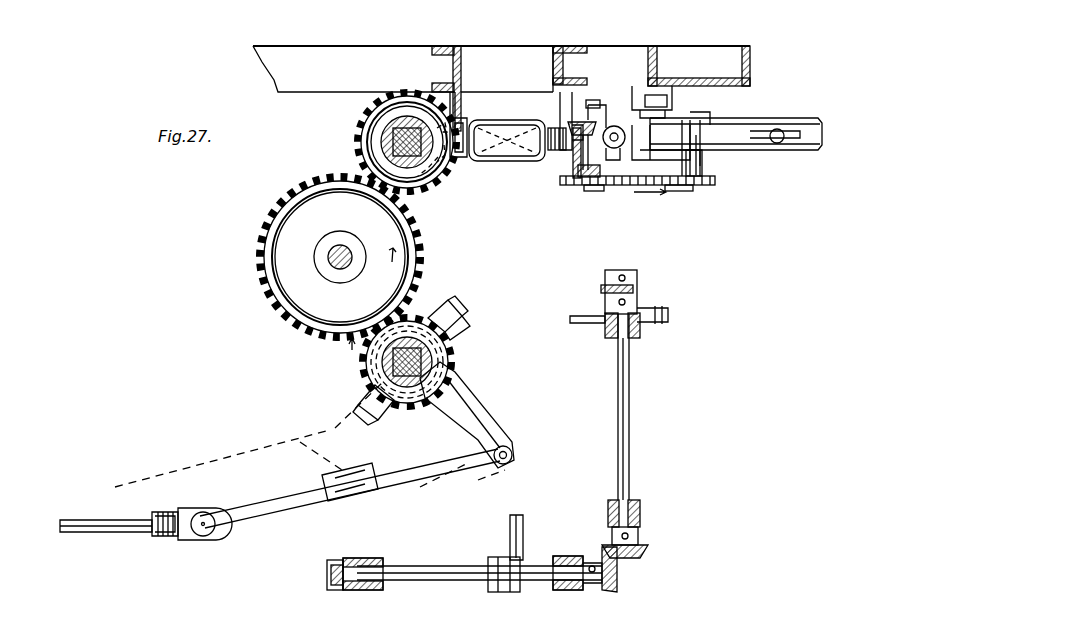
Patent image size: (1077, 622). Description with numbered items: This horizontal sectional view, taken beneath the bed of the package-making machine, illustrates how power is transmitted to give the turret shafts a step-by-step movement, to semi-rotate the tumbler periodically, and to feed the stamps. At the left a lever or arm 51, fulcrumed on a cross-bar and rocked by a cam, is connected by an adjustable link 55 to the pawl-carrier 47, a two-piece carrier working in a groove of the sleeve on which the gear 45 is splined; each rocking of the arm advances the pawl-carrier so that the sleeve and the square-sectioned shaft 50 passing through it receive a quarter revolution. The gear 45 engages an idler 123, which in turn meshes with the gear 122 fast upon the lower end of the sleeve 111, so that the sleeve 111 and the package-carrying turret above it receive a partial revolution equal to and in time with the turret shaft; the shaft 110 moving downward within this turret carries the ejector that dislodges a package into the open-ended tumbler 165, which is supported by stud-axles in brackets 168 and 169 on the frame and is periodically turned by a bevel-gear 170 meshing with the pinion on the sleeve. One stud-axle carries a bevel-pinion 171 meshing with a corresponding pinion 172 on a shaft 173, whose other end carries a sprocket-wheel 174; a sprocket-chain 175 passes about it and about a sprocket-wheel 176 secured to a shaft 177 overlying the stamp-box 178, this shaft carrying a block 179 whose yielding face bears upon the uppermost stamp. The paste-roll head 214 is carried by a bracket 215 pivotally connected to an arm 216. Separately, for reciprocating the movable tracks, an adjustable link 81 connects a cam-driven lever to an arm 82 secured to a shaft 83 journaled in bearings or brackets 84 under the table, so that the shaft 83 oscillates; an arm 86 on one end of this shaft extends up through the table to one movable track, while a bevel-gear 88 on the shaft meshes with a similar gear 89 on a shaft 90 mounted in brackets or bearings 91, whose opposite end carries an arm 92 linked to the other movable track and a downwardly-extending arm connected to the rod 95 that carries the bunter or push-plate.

The gear 45 is at (425, 320).
The pawl-carrier 47 is at (470, 412).
The shaft 50 is at (445, 358).
The lever or arm 51 is at (90, 524).
The adjustable link 55 is at (258, 510).
The adjustable link 81 is at (587, 318).
The arm 82 is at (660, 310).
The shaft 83 is at (630, 425).
The bearings or brackets 84 is at (638, 330).
The arm 86 is at (604, 290).
The bevel-gear 88 is at (640, 552).
The bevel-gear 89 is at (614, 580).
The shaft 90 is at (466, 578).
The brackets or bearings 91 is at (368, 590).
The arm 92 is at (327, 572).
The rod 95 is at (522, 530).
The shaft 110 is at (385, 146).
The sleeve 111 is at (383, 132).
The gear 122 is at (440, 168).
The idler 123 is at (405, 270).
The open-ended box or tumbler 165 is at (512, 153).
The bracket 168 is at (455, 107).
The bracket 169 is at (560, 110).
The bevel-gear 170 is at (392, 210).
The bevel-pinion 171 is at (558, 152).
The pinion 172 is at (606, 120).
The shaft 173 is at (605, 160).
The sprocket-wheel 174 is at (583, 180).
The sprocket-chain 175 is at (680, 190).
The sprocket-wheel 176 is at (705, 185).
The shaft 177 is at (716, 155).
The stamp-box 178 is at (735, 120).
The block 179 is at (706, 135).
The head 214 is at (612, 150).
The bracket 215 is at (650, 92).
The arm 216 is at (655, 100).